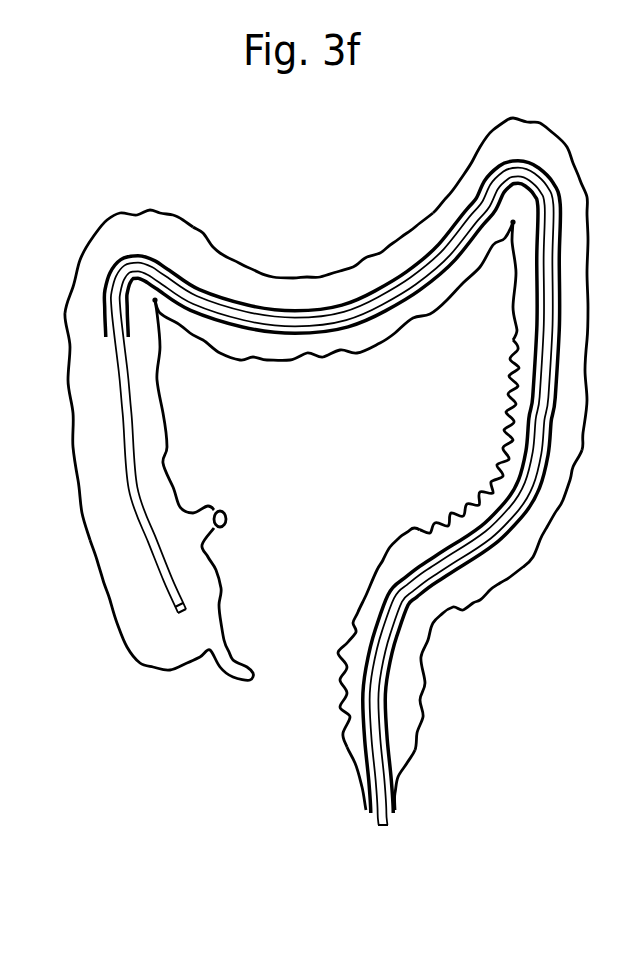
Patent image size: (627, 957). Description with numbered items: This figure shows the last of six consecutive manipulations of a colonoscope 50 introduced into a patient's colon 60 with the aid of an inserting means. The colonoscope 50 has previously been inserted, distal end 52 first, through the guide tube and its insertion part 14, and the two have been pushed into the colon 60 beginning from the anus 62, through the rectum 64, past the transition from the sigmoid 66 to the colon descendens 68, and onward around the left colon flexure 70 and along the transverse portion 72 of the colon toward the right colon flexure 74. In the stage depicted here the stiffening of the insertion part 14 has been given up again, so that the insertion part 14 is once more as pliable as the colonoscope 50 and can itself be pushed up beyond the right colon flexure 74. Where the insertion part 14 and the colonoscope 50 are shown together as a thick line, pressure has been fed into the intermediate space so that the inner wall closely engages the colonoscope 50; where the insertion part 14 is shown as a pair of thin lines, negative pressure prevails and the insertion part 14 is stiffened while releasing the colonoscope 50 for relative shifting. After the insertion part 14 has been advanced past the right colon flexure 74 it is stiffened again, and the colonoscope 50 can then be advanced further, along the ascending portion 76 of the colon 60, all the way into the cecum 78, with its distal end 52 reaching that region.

The insertion part 14 is at (370, 818).
The colonoscope 50 is at (286, 521).
The distal end 52 is at (180, 618).
The colon 60 is at (332, 425).
The anus 62 is at (400, 793).
The rectum 64 is at (350, 623).
The sigmoid 66 is at (478, 583).
The colon descendens 68 is at (519, 387).
The left colon flexure 70 is at (537, 140).
The transverse colon 72 is at (345, 292).
The right colon flexure 74 is at (125, 230).
The ascending colon 76 is at (153, 462).
The cecum 78 is at (210, 603).